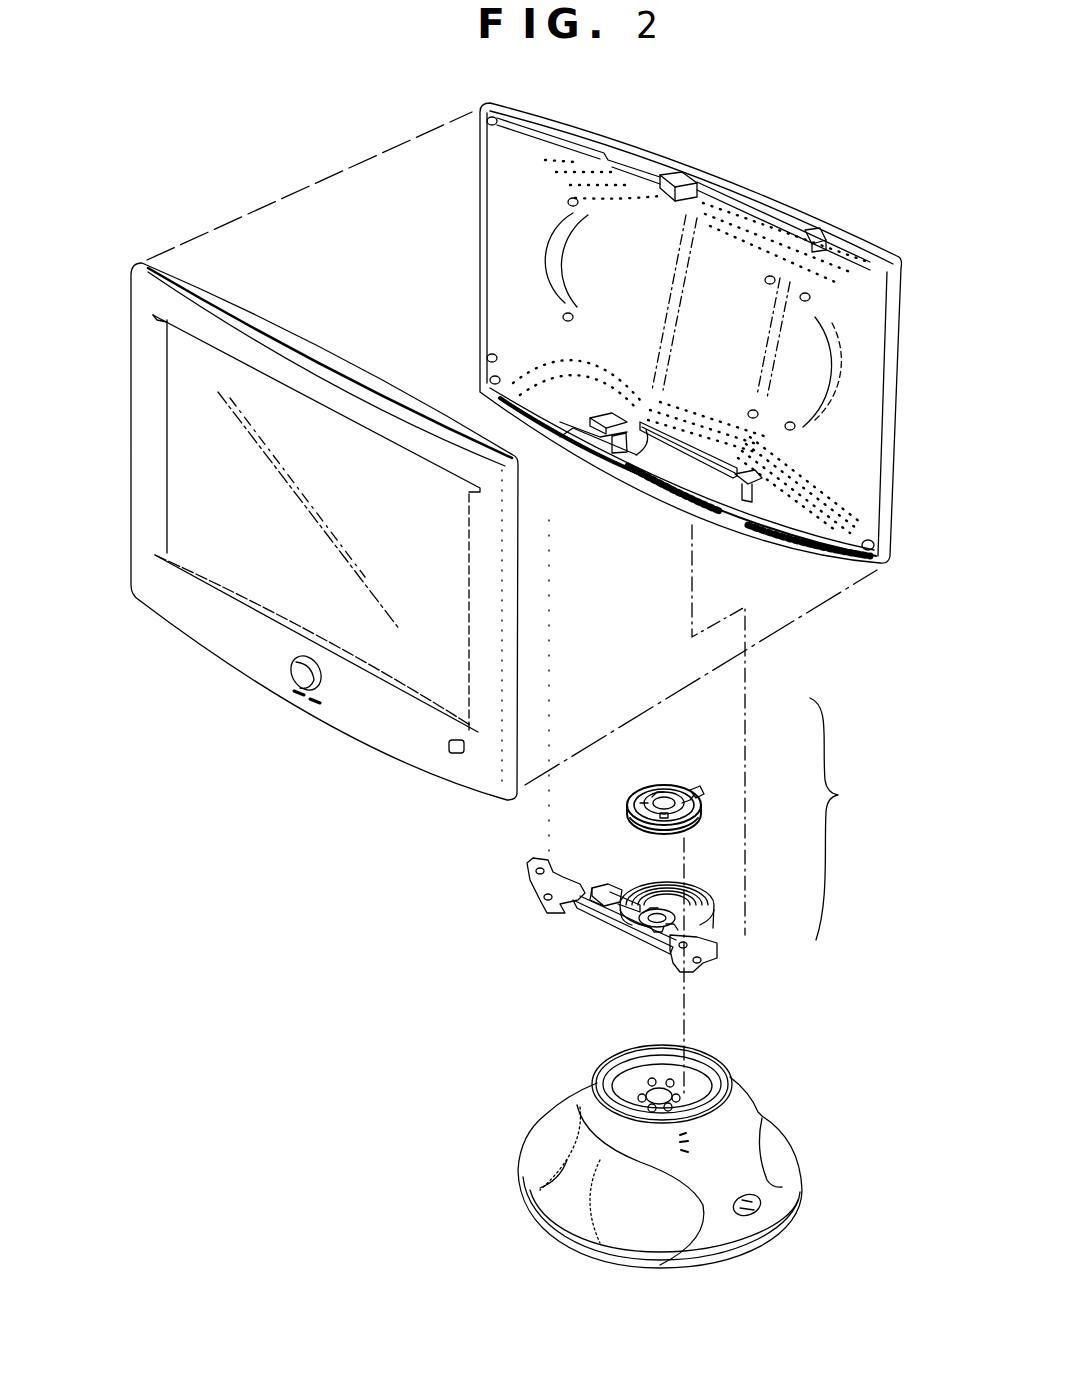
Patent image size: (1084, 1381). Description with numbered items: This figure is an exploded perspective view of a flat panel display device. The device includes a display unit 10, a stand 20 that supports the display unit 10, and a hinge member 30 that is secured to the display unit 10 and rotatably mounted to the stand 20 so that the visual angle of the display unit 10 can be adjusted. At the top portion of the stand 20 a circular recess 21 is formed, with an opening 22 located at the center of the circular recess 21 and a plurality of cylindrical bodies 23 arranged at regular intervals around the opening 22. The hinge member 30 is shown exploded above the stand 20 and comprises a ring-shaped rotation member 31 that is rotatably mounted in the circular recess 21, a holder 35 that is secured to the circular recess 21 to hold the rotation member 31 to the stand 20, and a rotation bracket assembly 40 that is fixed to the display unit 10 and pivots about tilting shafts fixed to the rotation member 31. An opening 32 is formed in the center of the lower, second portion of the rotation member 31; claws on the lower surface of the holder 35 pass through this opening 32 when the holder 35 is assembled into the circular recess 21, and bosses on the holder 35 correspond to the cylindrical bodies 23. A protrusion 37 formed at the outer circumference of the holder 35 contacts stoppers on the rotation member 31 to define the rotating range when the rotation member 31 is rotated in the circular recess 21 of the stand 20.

The display unit 10 is at (743, 150).
The stand 20 is at (512, 1177).
The circular recess 21 is at (697, 1083).
The opening 22 is at (650, 1083).
The cylindrical bodies 23 is at (632, 1090).
The hinge member 30 is at (879, 809).
The rotation member 31 is at (692, 883).
The opening 32 is at (710, 903).
The holder 35 is at (709, 807).
The protrusion 37 is at (688, 793).
The rotation bracket assembly 40 is at (528, 892).